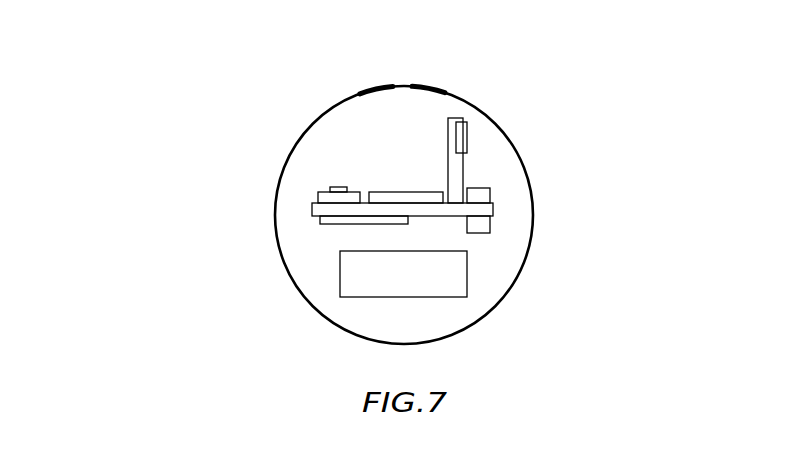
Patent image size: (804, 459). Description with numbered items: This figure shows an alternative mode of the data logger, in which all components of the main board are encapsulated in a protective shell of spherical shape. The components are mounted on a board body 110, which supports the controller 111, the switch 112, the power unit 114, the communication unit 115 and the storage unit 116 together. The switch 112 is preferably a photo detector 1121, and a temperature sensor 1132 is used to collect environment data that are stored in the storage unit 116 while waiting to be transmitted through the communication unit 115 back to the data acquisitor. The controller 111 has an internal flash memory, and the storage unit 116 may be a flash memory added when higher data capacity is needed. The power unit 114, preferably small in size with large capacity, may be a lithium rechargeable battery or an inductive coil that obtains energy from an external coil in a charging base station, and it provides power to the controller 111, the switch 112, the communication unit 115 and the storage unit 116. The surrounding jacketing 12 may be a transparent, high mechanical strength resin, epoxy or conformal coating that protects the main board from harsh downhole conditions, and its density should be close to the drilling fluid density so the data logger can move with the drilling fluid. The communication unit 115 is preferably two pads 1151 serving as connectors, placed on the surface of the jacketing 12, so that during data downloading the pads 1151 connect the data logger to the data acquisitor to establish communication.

The board body 110 is at (507, 241).
The communication unit 115 is at (279, 42).
The pads 1151 is at (373, 86).
The switch 112 is at (173, 160).
The jacketing 12 is at (288, 212).
The storage unit 116 is at (340, 221).
The photo detector 1121 is at (332, 198).
The controller 111 is at (400, 198).
The temperature sensor 1132 is at (457, 170).
The power unit 114 is at (370, 270).